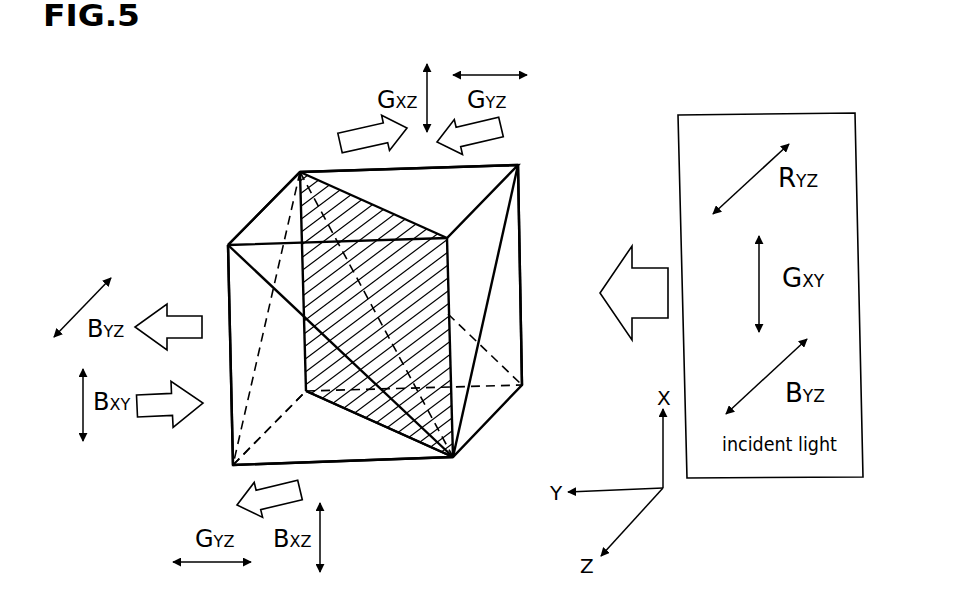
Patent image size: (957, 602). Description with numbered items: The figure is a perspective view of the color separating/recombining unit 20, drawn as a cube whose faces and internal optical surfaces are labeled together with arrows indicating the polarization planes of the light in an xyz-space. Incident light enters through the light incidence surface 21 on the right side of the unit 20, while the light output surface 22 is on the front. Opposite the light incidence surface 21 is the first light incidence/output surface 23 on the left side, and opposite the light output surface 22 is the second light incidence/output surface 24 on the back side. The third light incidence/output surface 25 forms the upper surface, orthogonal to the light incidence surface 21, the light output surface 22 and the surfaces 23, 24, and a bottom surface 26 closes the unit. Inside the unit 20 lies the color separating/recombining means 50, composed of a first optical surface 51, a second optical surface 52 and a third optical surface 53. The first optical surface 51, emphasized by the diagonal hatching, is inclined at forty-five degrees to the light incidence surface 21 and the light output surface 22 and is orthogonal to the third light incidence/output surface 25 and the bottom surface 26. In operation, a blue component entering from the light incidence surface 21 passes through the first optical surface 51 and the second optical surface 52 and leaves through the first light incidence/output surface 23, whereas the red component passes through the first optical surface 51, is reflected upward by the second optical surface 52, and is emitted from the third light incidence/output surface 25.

The color separating/recombining unit 20 is at (484, 434).
The light incidence surface 21 is at (509, 257).
The light output surface 22 is at (330, 449).
The first light incidence/output surface 23 is at (225, 403).
The second light incidence/output surface 24 is at (508, 318).
The third light incidence/output surface 25 is at (495, 164).
The bottom surface 26 is at (387, 453).
The color separating/recombining means 50 is at (281, 181).
The first optical surface 51 is at (340, 187).
The second optical surface 52 is at (228, 273).
The third optical surface 53 is at (507, 212).